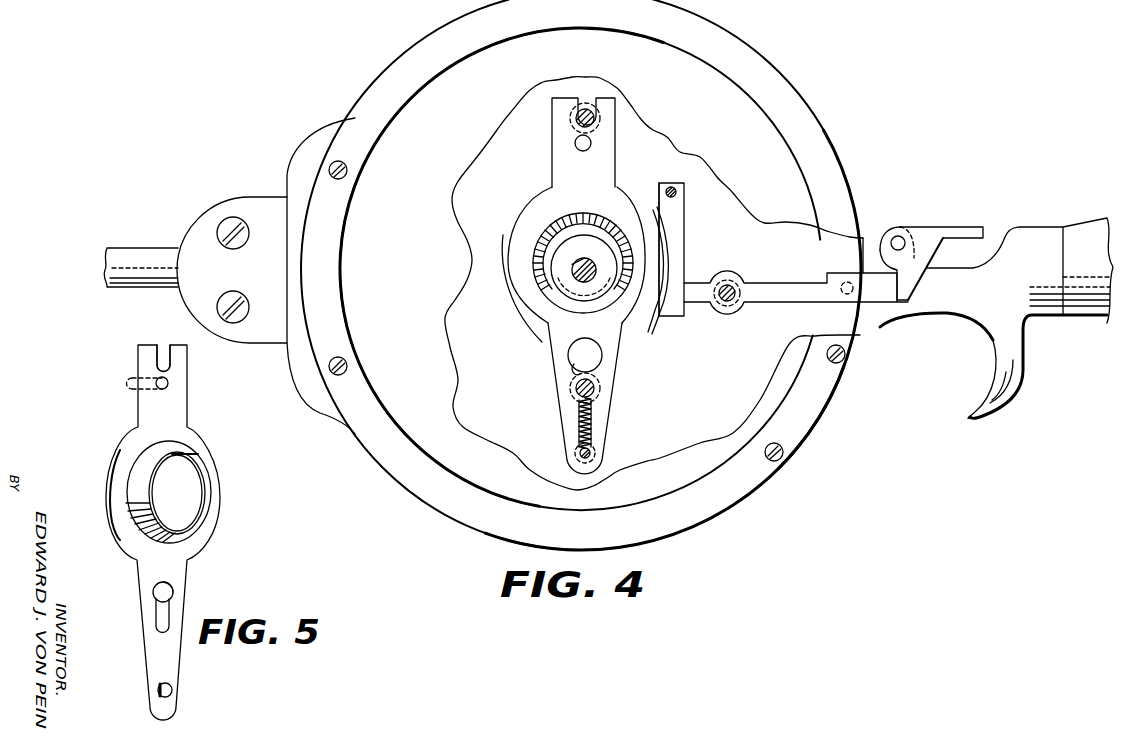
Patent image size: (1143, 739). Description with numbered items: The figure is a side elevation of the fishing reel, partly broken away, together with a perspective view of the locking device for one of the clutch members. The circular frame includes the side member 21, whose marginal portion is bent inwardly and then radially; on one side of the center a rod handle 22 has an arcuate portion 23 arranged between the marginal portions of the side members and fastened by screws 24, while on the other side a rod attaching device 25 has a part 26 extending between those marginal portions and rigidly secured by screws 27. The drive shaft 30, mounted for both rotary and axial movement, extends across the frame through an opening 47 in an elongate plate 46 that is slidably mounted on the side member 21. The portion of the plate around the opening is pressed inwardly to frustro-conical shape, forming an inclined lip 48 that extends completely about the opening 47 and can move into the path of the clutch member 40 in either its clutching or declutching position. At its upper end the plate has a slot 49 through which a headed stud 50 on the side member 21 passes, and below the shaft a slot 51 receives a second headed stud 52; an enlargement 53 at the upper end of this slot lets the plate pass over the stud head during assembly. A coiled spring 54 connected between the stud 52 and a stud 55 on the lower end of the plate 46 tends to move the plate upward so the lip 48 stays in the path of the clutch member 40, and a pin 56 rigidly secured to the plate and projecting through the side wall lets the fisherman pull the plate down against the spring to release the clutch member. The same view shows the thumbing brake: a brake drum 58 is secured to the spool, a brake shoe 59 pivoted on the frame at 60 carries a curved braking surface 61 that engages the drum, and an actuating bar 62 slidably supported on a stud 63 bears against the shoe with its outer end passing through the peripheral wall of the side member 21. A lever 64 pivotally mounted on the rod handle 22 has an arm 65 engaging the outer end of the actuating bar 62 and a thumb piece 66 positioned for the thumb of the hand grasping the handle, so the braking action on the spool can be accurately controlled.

In FIG. 4, the side member 21 is at (777, 152).
In FIG. 4, the rod handle 22 is at (1052, 310).
In FIG. 4, the arcuate portion 23 is at (857, 333).
In FIG. 4, the screws 24 is at (818, 427).
In FIG. 4, the rod attaching device 25 is at (273, 200).
In FIG. 4, the part 26 is at (316, 385).
In FIG. 4, the screws 27 is at (348, 170).
In FIG. 4, the drive shaft 30 is at (592, 290).
In FIG. 4, the clutch member 40 is at (568, 282).
In FIG. 4, the elongate plate 46 is at (608, 182).
In FIG. 5, the elongate plate 46 is at (178, 432).
In FIG. 4, the opening 47 is at (606, 236).
In FIG. 5, the opening 47 is at (200, 494).
In FIG. 4, the inclined lip 48 is at (656, 334).
In FIG. 5, the inclined lip 48 is at (175, 535).
In FIG. 4, the slot 49 is at (588, 104).
In FIG. 5, the slot 49 is at (170, 354).
In FIG. 4, the headed stud 50 is at (598, 118).
In FIG. 4, the slot 51 is at (602, 365).
In FIG. 5, the slot 51 is at (157, 614).
In FIG. 4, the headed stud 52 is at (594, 386).
In FIG. 4, the enlargement 53 is at (573, 366).
In FIG. 5, the enlargement 53 is at (167, 591).
In FIG. 4, the coiled spring 54 is at (593, 415).
In FIG. 4, the stud 55 is at (592, 454).
In FIG. 5, the stud 55 is at (180, 690).
In FIG. 4, the pin 56 is at (577, 142).
In FIG. 5, the pin 56 is at (134, 383).
In FIG. 4, the brake drum 58 is at (540, 333).
In FIG. 4, the brake shoe 59 is at (680, 242).
In FIG. 4, the pivot 60 is at (677, 192).
In FIG. 4, the curved braking surface 61 is at (681, 268).
In FIG. 4, the actuating bar 62 is at (788, 296).
In FIG. 4, the stud 63 is at (740, 285).
In FIG. 4, the lever 64 is at (897, 225).
In FIG. 4, the arm 65 is at (910, 270).
In FIG. 4, the thumb piece 66 is at (962, 227).